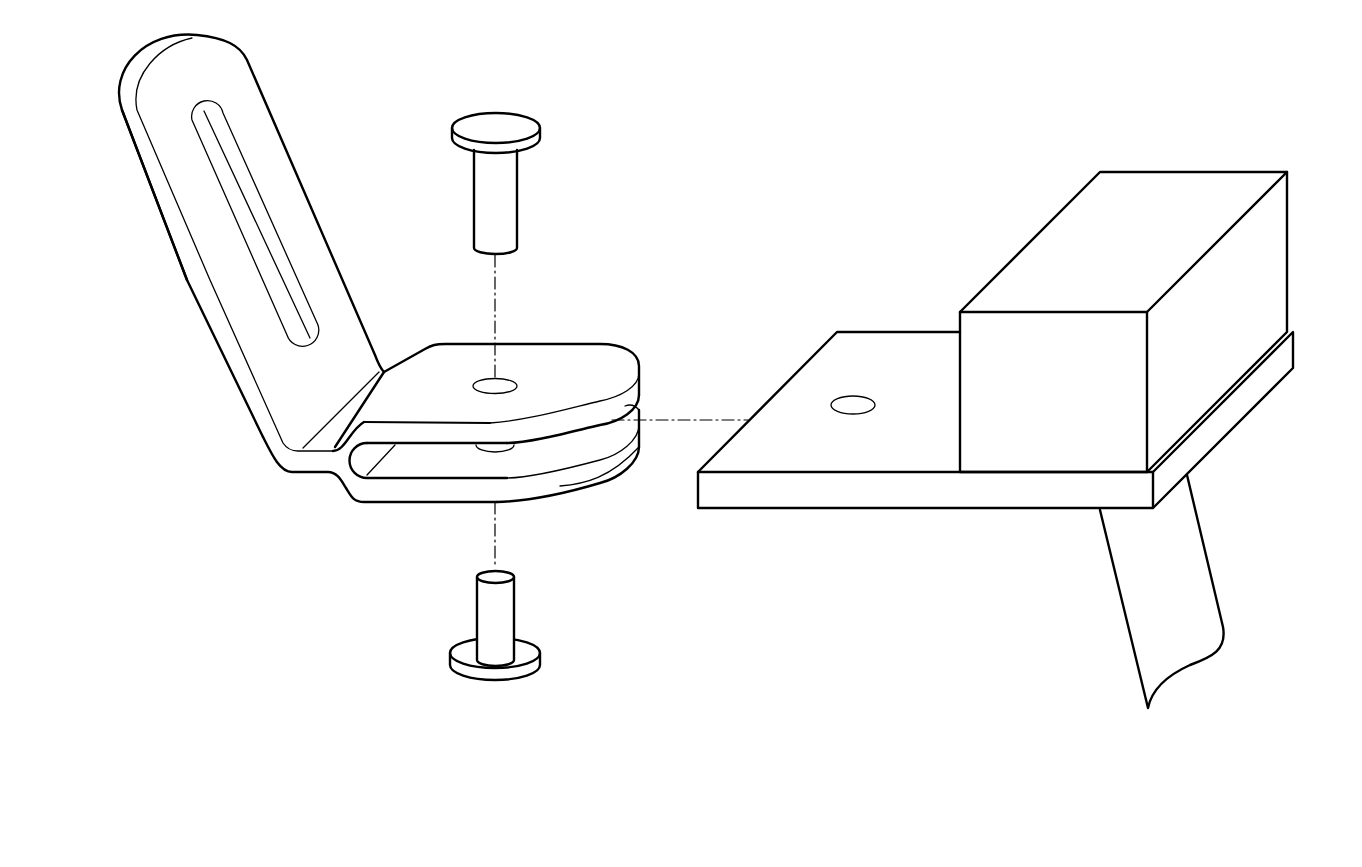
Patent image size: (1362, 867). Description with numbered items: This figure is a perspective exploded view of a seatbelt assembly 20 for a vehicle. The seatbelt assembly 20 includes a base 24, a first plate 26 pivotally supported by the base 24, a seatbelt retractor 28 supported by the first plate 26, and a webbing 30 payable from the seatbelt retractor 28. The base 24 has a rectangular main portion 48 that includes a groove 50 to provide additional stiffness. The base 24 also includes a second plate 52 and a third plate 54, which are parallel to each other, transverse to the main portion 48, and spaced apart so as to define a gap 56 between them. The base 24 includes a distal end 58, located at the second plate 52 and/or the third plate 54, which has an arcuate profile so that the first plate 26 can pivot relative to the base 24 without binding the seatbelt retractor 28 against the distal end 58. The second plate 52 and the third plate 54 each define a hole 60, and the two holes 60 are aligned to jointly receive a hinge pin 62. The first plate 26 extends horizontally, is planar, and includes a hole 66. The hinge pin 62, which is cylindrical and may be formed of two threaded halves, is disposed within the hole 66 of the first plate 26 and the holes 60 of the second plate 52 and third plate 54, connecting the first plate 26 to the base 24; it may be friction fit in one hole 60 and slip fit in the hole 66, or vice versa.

The seatbelt assembly 20 is at (888, 71).
The base 24 is at (192, 295).
The first plate 26 is at (868, 492).
The seatbelt retractor 28 is at (1273, 233).
The webbing 30 is at (1193, 585).
The main portion 48 is at (152, 205).
The groove 50 is at (248, 190).
The second plate 52 is at (552, 362).
The third plate 54 is at (560, 485).
The gap 56 is at (585, 440).
The distal end 58 is at (642, 372).
The hole 60 is at (490, 378).
The hinge pin 62 is at (518, 208).
The hole 66 is at (858, 392).